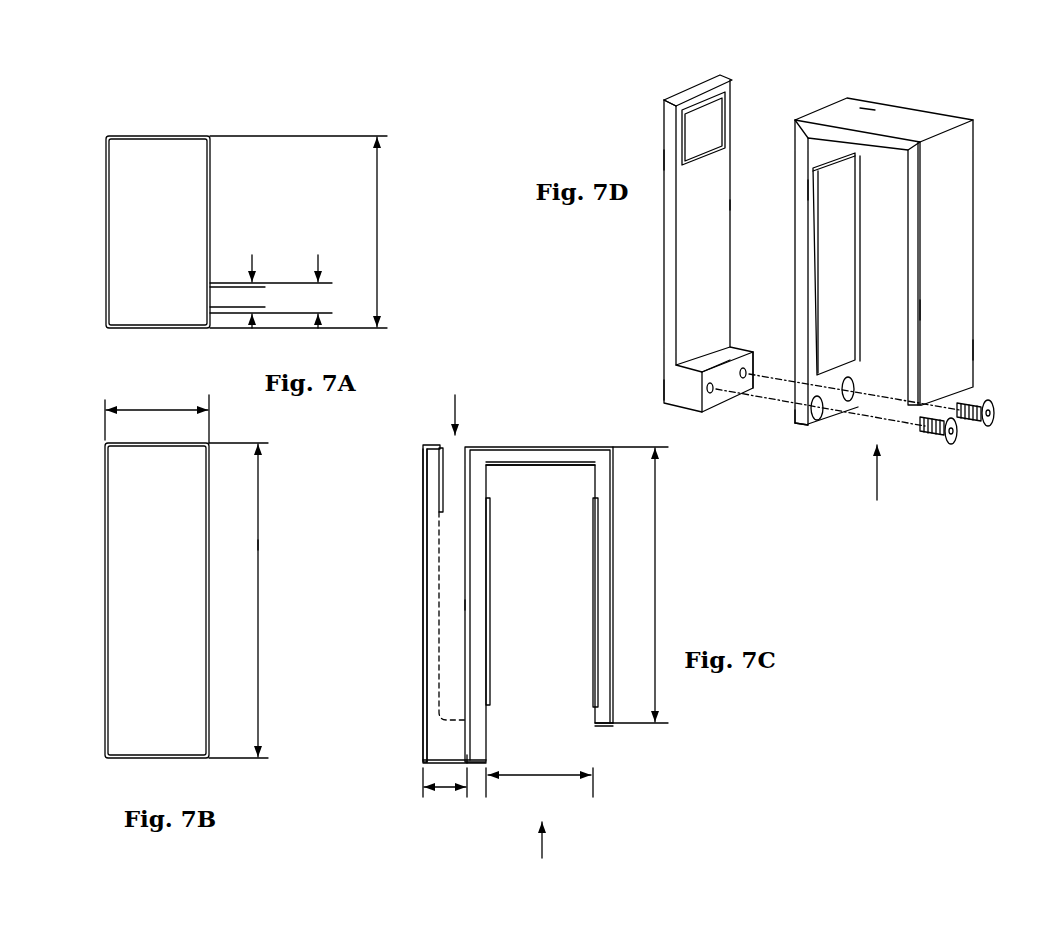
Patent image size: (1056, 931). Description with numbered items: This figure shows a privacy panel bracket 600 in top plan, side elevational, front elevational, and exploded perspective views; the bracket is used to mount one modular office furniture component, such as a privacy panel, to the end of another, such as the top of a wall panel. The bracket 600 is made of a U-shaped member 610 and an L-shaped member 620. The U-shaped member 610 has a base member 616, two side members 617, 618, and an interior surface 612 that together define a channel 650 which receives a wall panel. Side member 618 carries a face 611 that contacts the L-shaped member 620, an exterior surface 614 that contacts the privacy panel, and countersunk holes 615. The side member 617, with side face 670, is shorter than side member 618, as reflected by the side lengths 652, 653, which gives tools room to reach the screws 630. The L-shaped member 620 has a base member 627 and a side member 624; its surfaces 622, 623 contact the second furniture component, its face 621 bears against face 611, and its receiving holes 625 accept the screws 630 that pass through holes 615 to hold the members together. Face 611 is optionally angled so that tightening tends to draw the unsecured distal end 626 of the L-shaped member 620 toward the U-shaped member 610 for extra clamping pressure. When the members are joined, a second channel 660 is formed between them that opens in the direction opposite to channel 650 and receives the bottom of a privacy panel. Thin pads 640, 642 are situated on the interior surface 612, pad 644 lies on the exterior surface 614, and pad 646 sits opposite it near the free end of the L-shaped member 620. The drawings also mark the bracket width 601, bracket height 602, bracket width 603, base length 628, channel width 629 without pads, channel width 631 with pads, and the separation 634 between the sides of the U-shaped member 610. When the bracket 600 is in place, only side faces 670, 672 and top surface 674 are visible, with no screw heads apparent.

In FIG. 7D, the privacy panel bracket 600 is at (933, 65).
In FIG. 7B, the bracket width 601 is at (160, 410).
In FIG. 7B, the bracket height 602 is at (279, 600).
In FIG. 7A, the bracket width 603 is at (378, 227).
In FIG. 7D, the U-shaped member 610 is at (938, 118).
In FIG. 7C, the face 611 is at (467, 745).
In FIG. 7D, the face 611 is at (790, 416).
In FIG. 7C, the interior surface 612 is at (487, 477).
In FIG. 7D, the interior surface 612 is at (828, 152).
In FIG. 7C, the exterior surface 614 is at (467, 688).
In FIG. 7D, the exterior surface 614 is at (788, 128).
In FIG. 7D, the holes 615 is at (848, 401).
In FIG. 7D, the base member 616 is at (867, 110).
In FIG. 7C, the side member 617 is at (600, 727).
In FIG. 7D, the side member 617 is at (973, 350).
In FIG. 7C, the side member 618 is at (472, 765).
In FIG. 7D, the side member 618 is at (797, 428).
In FIG. 7D, the L-shaped member 620 is at (656, 240).
In FIG. 7D, the face 621 is at (750, 356).
In FIG. 7D, the surface 622 is at (710, 214).
In FIG. 7D, the surface 623 is at (731, 353).
In FIG. 7D, the side member 624 is at (680, 95).
In FIG. 7D, the receiving holes 625 is at (743, 378).
In FIG. 7C, the distal end 626 is at (422, 478).
In FIG. 7D, the distal end 626 is at (664, 128).
In FIG. 7D, the base member 627 is at (690, 388).
In FIG. 7C, the L-shaped member base length 628 is at (445, 790).
In FIG. 7A, the channel width without pads 629 is at (318, 330).
In FIG. 7D, the screws 630 is at (986, 427).
In FIG. 7A, the channel width with pads 631 is at (252, 330).
In FIG. 7C, the separation 634 is at (548, 778).
In FIG. 7C, the pad 640 is at (595, 560).
In FIG. 7C, the pad 642 is at (488, 543).
In FIG. 7A, the pad 644 is at (125, 283).
In FIG. 7C, the pad 644 is at (465, 582).
In FIG. 7A, the pad 646 is at (125, 310).
In FIG. 7C, the pad 646 is at (443, 462).
In FIG. 7D, the pad 646 is at (700, 143).
In FIG. 7C, the channel 650 is at (542, 851).
In FIG. 7D, the channel 650 is at (878, 487).
In FIG. 7C, the U-shaped member side length 652 is at (657, 583).
In FIG. 7B, the U-shaped member side length 653 is at (262, 545).
In FIG. 7C, the second channel 660 is at (458, 403).
In FIG. 7C, the side face 670 is at (518, 624).
In FIG. 7D, the side face 670 is at (886, 279).
In FIG. 7B, the side face 672 is at (157, 600).
In FIG. 7C, the side face 672 is at (422, 540).
In FIG. 7A, the top surface 674 is at (158, 232).